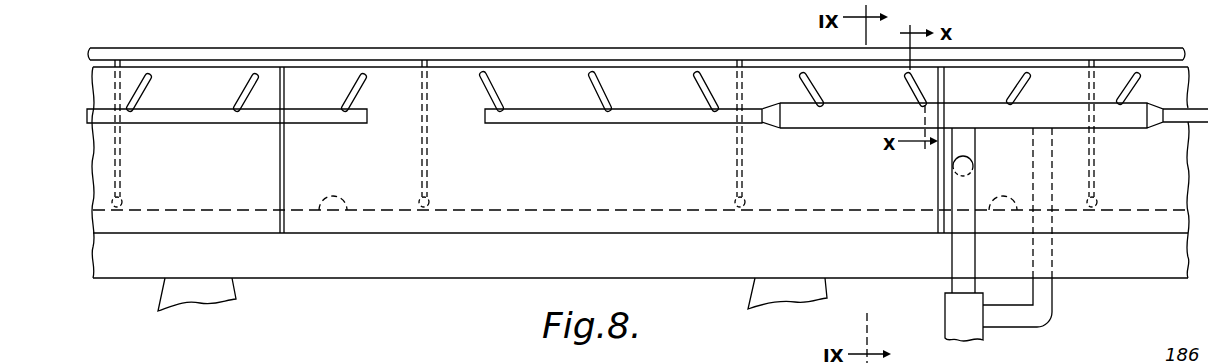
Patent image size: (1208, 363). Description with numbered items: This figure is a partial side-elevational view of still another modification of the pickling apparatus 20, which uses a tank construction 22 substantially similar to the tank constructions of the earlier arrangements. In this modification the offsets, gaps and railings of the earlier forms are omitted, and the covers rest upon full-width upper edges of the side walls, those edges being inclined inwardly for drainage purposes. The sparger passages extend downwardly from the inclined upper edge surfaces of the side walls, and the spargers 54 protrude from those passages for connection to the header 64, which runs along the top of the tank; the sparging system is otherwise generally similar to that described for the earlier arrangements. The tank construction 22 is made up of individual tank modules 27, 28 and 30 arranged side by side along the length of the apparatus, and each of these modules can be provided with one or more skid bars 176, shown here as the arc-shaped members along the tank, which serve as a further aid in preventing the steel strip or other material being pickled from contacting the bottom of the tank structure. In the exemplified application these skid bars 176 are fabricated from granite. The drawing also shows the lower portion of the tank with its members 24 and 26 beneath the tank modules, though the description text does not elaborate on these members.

The pickling apparatus 20 is at (619, 33).
The header 64 is at (680, 50).
The tank construction 22 is at (370, 220).
The lower rail 24 is at (303, 263).
The support bracket 26 is at (227, 300).
The tank module 27 is at (232, 193).
The tank module 28 is at (630, 190).
The tank module 30 is at (1133, 197).
The sparger 54 is at (429, 200).
The skid bar 176 is at (340, 196).